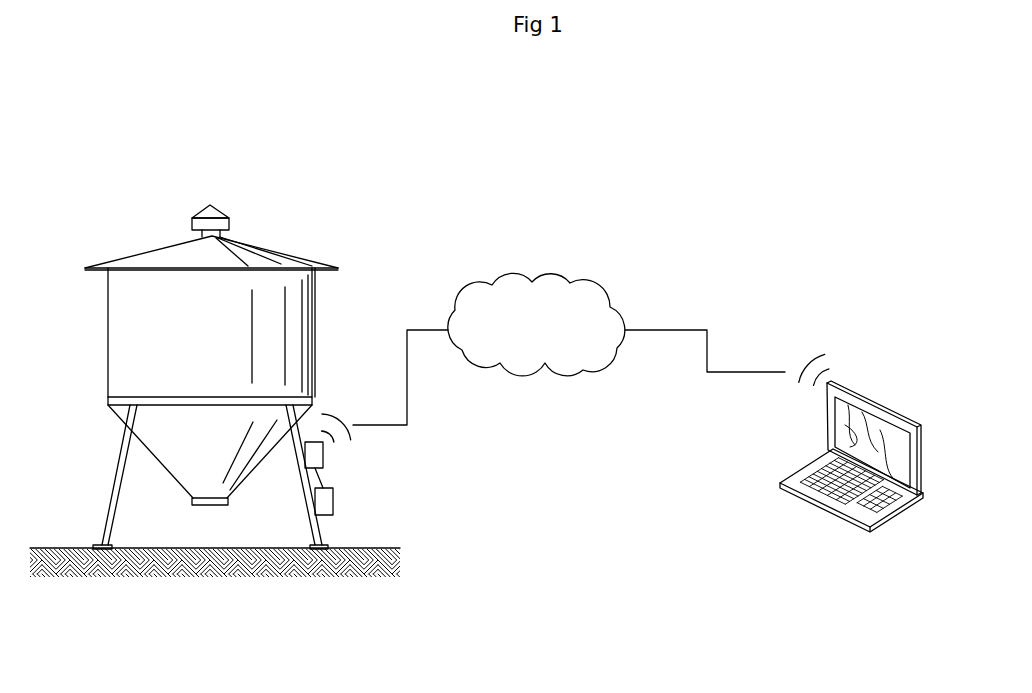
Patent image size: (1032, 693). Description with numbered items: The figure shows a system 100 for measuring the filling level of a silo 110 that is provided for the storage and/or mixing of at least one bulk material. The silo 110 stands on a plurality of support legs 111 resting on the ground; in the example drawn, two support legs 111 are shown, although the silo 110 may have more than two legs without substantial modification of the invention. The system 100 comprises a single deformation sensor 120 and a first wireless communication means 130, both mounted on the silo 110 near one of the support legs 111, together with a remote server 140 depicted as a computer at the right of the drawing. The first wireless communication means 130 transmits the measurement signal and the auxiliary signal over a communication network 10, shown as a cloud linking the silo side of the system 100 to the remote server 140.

The system 100 is at (381, 117).
The silo 110 is at (125, 222).
The support legs 111 is at (297, 487).
The deformation sensor 120 is at (333, 502).
The first wireless communication means 130 is at (323, 455).
The communication network 10 is at (553, 332).
The remote server 140 is at (837, 548).